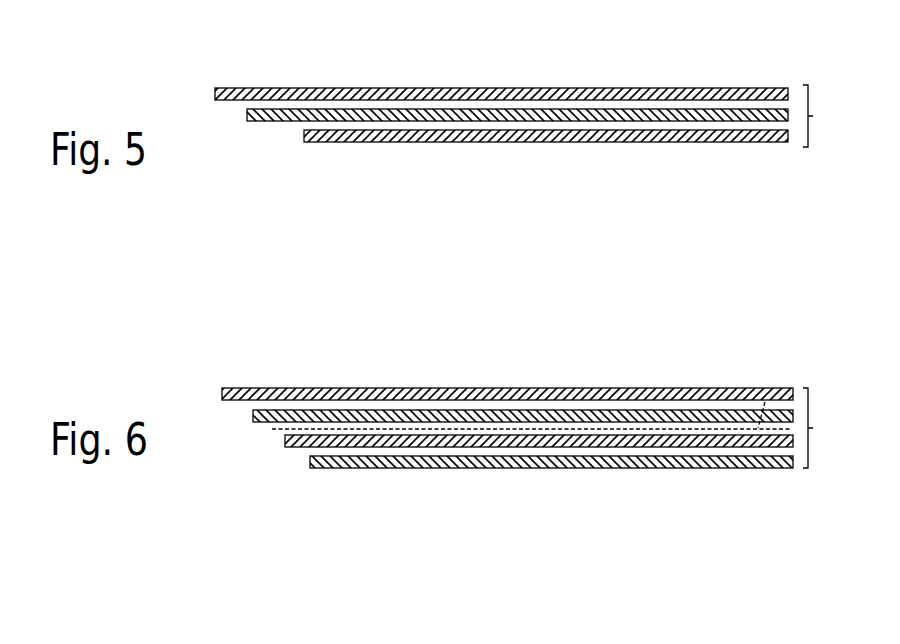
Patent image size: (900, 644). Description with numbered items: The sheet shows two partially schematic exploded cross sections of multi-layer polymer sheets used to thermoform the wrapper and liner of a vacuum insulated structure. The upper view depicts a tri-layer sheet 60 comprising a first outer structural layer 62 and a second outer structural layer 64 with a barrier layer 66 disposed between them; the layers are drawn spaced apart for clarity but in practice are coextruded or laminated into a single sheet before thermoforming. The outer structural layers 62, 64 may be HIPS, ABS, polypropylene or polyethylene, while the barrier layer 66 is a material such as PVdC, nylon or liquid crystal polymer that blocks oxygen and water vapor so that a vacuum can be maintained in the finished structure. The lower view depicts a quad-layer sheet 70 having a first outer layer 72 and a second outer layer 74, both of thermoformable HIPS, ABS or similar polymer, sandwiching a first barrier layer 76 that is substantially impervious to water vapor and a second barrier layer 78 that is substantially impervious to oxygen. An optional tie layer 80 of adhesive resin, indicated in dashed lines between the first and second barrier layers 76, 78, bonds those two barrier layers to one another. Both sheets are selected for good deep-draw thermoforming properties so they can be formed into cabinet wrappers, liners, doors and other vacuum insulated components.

In FIG. 5, the tri-layer sheet 60 is at (829, 116).
In FIG. 5, the first outer structural layer 62 is at (350, 88).
In FIG. 5, the second outer structural layer 64 is at (447, 142).
In FIG. 5, the barrier layer 66 is at (283, 122).
In FIG. 6, the quad-layer sheet 70 is at (832, 428).
In FIG. 6, the first outer layer 72 is at (307, 388).
In FIG. 6, the second outer layer 74 is at (352, 468).
In FIG. 6, the first barrier layer 76 is at (262, 422).
In FIG. 6, the second barrier layer 78 is at (296, 447).
In FIG. 6, the tie layer 80 is at (780, 386).